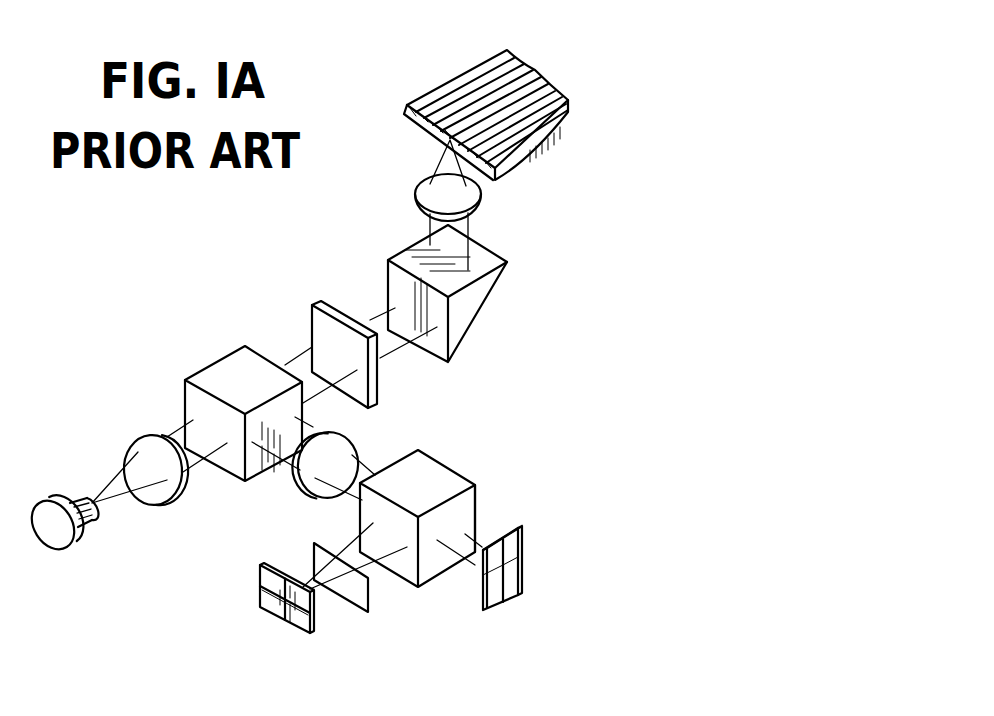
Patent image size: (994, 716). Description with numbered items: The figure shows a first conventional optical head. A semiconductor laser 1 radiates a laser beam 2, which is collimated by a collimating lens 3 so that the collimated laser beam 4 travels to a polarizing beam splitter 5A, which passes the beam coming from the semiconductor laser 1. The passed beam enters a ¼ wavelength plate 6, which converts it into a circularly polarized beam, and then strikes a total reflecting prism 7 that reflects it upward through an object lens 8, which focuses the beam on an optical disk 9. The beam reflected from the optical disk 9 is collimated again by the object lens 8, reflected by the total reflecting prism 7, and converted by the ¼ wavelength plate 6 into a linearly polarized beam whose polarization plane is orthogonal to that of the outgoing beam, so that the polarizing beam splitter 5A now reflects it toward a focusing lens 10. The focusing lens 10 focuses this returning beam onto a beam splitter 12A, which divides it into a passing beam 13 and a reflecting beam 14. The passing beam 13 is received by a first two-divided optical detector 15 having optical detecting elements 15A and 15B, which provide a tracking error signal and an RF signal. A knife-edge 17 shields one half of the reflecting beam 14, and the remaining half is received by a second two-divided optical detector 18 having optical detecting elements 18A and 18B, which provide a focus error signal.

The semiconductor laser 1 is at (60, 543).
The laser beam 2 is at (115, 477).
The collimating lens 3 is at (147, 503).
The laser beam 4 is at (168, 433).
The polarizing beam splitter 5A is at (213, 375).
The ¼ wavelength plate 6 is at (318, 330).
The total reflecting prism 7 is at (470, 312).
The object lens 8 is at (484, 200).
The optical disk 9 is at (407, 107).
The focusing lens 10 is at (352, 442).
The beam splitter 12A is at (448, 478).
The passing beam 13 is at (475, 555).
The reflecting beam 14 is at (340, 543).
The first two-divided optical detector 15 is at (500, 537).
The optical detecting element 15A is at (497, 614).
The optical detecting element 15B is at (518, 578).
The knife-edge 17 is at (357, 600).
The second two-divided optical detector 18 is at (258, 593).
The optical detecting element 18A is at (275, 610).
The optical detecting element 18B is at (300, 632).